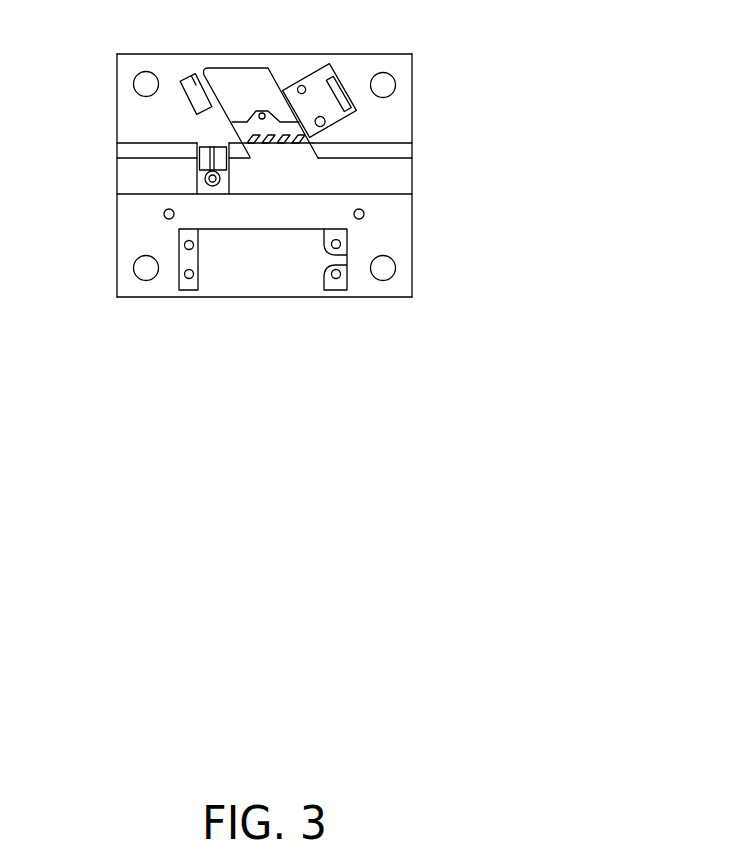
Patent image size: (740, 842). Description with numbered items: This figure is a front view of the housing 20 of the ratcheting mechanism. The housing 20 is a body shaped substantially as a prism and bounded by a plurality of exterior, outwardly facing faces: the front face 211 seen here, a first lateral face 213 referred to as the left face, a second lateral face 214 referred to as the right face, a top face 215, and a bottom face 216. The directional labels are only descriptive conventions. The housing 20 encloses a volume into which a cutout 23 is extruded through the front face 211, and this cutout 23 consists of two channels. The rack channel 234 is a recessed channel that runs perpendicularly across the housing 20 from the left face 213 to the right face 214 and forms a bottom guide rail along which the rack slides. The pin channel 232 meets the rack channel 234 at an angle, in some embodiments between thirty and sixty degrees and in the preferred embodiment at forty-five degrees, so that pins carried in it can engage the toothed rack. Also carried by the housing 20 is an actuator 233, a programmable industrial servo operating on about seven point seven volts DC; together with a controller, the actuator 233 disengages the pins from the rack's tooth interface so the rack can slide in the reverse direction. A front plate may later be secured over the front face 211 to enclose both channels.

The housing 20 is at (574, 197).
The cutout 23 is at (136, 177).
The front face 211 is at (395, 288).
The first lateral face 213 is at (414, 128).
The second lateral face 214 is at (115, 72).
The top face 215 is at (411, 54).
The bottom face 216 is at (150, 298).
The pin channel 232 is at (245, 73).
The actuator 233 is at (327, 72).
The rack channel 234 is at (405, 175).